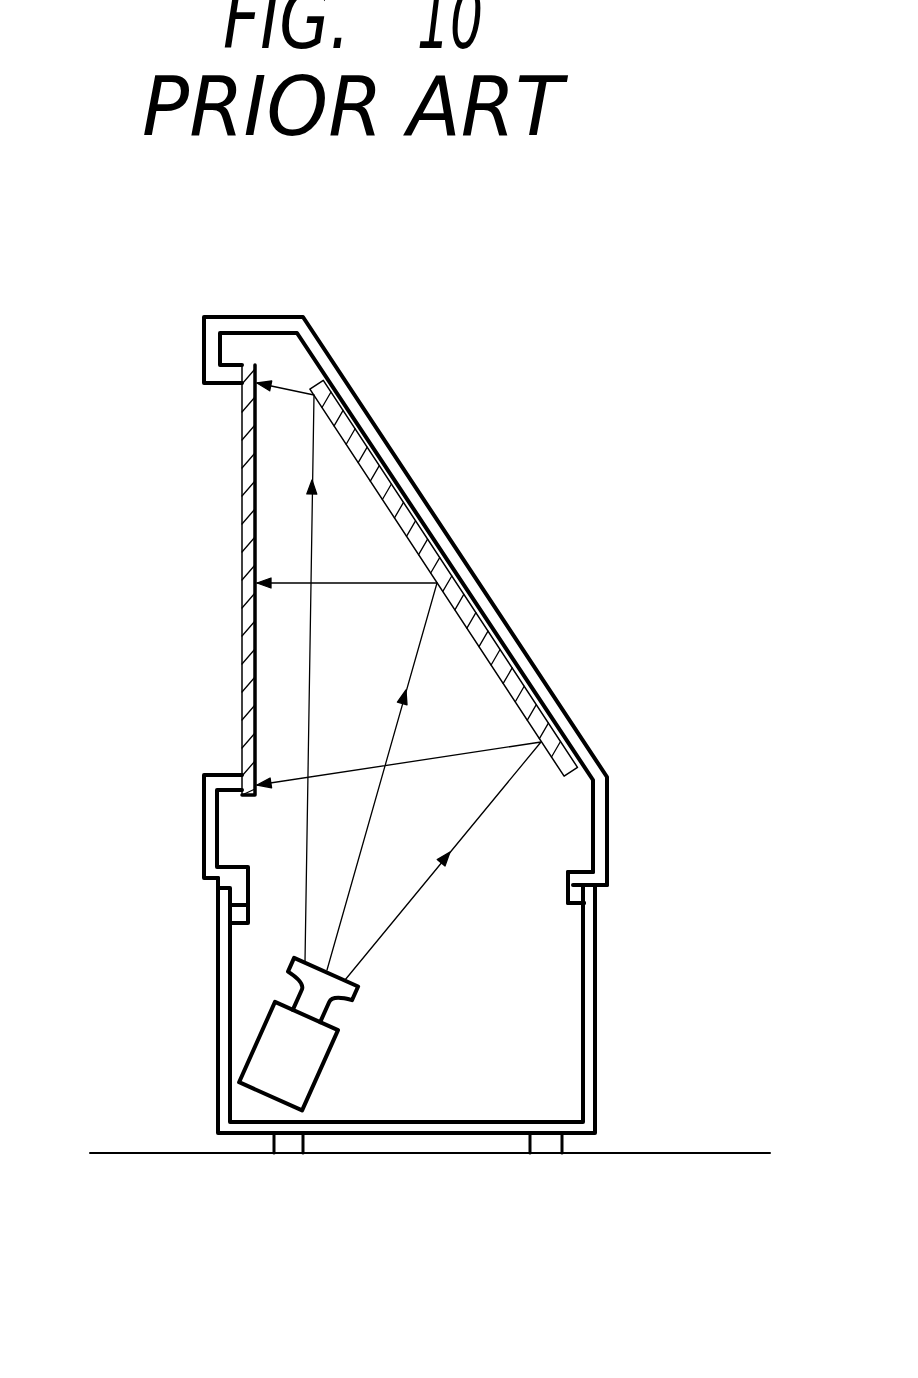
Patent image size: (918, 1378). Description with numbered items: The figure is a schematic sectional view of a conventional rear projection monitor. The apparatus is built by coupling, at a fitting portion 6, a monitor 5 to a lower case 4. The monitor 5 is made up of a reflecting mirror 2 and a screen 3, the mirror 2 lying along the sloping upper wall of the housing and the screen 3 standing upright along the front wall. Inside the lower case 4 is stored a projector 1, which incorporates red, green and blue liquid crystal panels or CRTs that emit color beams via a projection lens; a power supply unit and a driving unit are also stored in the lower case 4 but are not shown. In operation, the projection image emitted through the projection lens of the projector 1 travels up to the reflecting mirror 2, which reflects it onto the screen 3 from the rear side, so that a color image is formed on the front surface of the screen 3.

The projector 1 is at (275, 1083).
The reflecting mirror 2 is at (430, 542).
The screen 3 is at (242, 512).
The lower case 4 is at (220, 988).
The monitor 5 is at (288, 317).
The fitting portion 6 is at (607, 891).